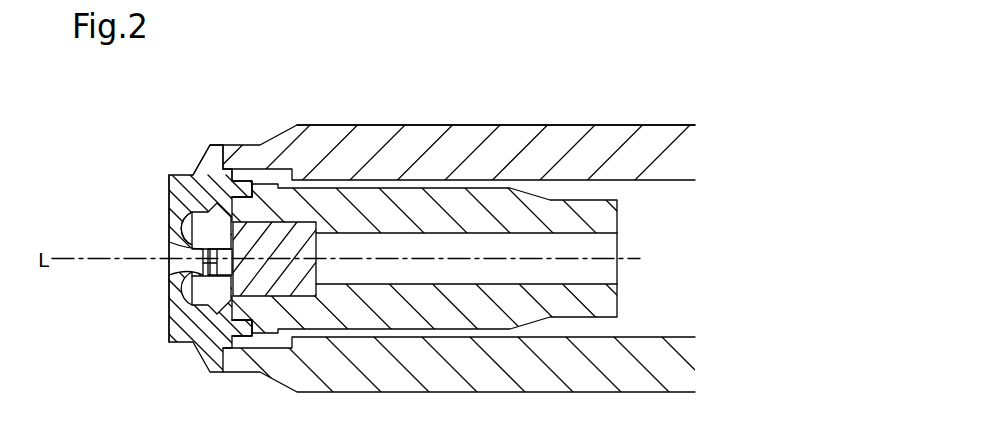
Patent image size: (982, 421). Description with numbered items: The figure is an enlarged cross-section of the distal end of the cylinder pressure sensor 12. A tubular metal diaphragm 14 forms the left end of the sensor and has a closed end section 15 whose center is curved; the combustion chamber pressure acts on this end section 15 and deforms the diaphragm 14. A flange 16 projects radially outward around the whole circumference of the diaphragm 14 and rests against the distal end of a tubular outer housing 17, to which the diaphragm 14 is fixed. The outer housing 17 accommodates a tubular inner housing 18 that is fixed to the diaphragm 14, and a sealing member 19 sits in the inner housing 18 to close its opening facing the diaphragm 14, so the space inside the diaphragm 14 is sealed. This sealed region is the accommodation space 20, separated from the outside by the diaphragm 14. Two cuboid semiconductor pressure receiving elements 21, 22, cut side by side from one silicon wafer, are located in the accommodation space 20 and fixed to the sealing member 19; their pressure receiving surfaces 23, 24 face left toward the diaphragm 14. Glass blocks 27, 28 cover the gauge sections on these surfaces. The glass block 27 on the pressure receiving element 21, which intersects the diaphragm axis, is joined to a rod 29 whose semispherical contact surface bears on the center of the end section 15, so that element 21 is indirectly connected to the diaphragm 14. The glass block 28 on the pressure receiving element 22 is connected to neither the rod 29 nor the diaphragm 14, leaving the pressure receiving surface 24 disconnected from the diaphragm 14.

The cylinder pressure sensor 12 is at (494, 106).
The diaphragm 14 is at (168, 175).
The end section 15 is at (168, 190).
The flange 16 is at (203, 148).
The outer housing 17 is at (331, 125).
The inner housing 18 is at (607, 218).
The sealing member 19 is at (306, 266).
The accommodation space 20 is at (223, 234).
The pressure receiving element 21 is at (219, 205).
The pressure receiving element 22 is at (218, 312).
The pressure receiving surface 23 is at (182, 228).
The pressure receiving surface 24 is at (192, 314).
The glass block 27 is at (190, 263).
The glass block 28 is at (178, 300).
The rod 29 is at (203, 253).